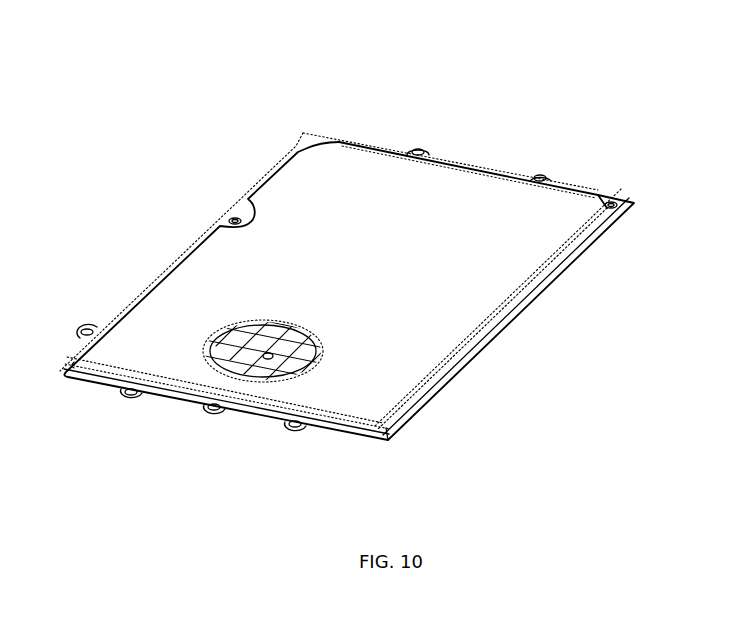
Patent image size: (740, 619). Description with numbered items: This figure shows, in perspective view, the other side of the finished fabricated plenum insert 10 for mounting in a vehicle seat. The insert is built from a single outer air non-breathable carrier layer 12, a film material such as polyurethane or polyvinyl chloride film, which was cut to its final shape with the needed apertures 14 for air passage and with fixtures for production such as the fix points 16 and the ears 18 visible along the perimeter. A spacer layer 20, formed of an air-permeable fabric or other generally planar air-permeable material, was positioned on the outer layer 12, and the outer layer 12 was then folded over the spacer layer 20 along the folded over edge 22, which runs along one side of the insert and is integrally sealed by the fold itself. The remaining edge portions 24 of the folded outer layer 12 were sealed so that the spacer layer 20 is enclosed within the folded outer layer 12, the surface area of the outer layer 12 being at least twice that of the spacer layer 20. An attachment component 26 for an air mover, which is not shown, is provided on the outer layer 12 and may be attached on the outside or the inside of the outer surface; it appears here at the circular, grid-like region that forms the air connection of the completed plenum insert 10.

The plenum insert 10 is at (266, 98).
The outer layer 12 is at (425, 337).
The apertures 14 is at (316, 354).
The fix points 16 is at (236, 219).
The ears 18 is at (420, 148).
The spacer layer 20 is at (270, 357).
The folded over edge 22 is at (547, 283).
The edge portions 24 is at (168, 272).
The attachment component 26 is at (215, 357).